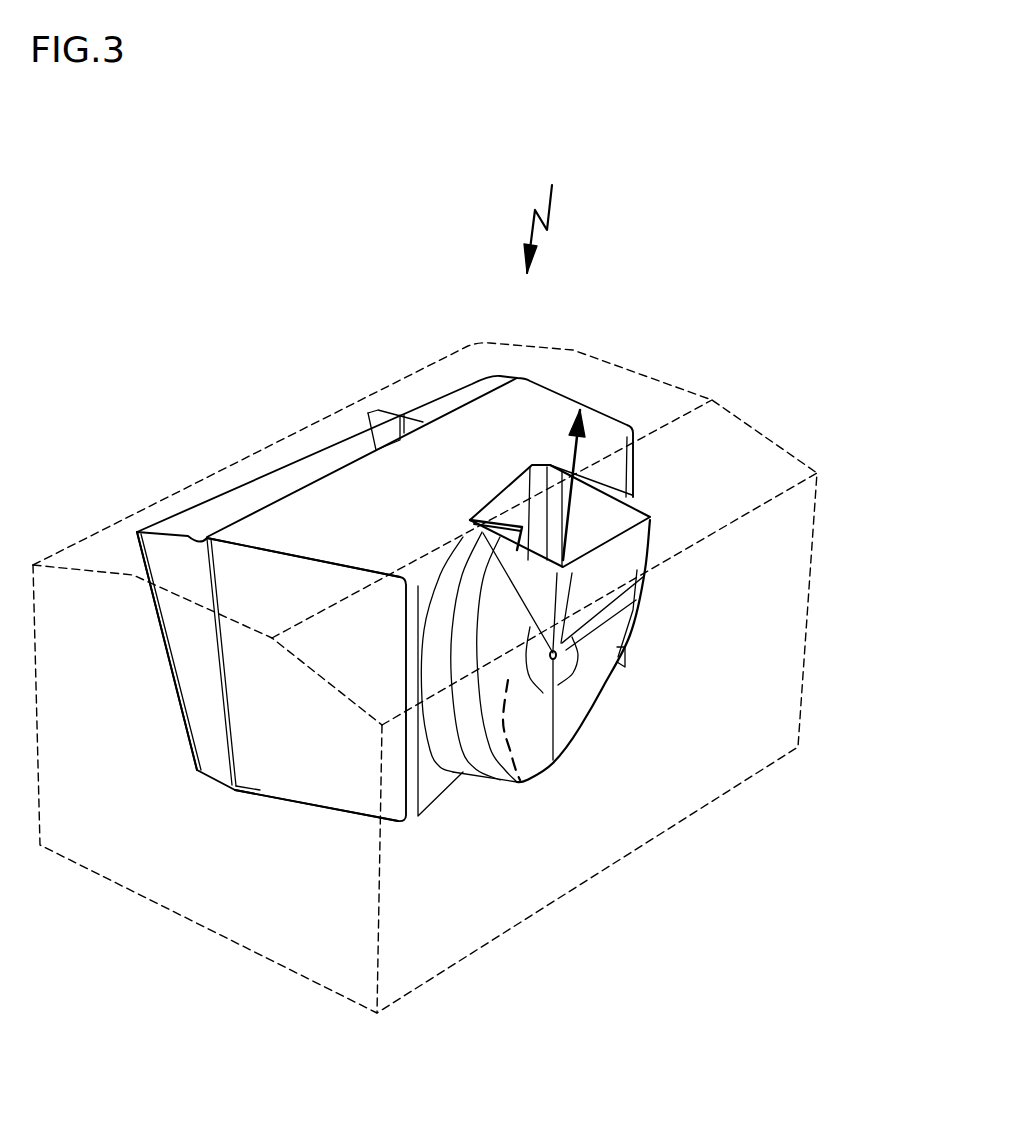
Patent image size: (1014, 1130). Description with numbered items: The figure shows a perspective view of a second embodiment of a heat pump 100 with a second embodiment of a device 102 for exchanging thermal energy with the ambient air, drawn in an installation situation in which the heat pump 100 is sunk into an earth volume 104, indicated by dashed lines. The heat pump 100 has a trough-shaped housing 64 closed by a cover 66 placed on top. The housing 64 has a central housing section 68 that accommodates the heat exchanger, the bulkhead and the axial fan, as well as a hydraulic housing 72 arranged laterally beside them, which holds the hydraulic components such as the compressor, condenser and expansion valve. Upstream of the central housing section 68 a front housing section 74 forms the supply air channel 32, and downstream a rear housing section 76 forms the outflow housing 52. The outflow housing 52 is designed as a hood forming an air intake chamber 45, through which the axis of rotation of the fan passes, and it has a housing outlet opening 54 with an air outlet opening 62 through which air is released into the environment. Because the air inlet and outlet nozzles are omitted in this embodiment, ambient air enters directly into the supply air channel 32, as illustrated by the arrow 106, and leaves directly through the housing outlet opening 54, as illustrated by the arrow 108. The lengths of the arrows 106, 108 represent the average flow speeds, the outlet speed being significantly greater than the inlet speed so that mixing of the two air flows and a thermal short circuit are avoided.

The heat pump 100 is at (549, 213).
The supply air channel 32 is at (186, 512).
The cover 66 is at (452, 425).
The device for exchanging thermal energy with the ambient air 102 is at (405, 382).
The arrow (incoming air flow) 106 is at (289, 482).
The arrow (outgoing air flow) 108 is at (577, 437).
The hydraulic housing 72 is at (622, 460).
The housing outlet opening 54 is at (637, 527).
The air outlet opening 62 is at (600, 537).
The earth volume 104 is at (787, 593).
The front housing section 74 is at (207, 683).
The central housing section 68 is at (265, 772).
The trough-shaped housing 64 is at (310, 783).
The rear housing section 76 is at (465, 758).
The outflow housing 52 is at (577, 707).
The air intake chamber 45 is at (520, 780).